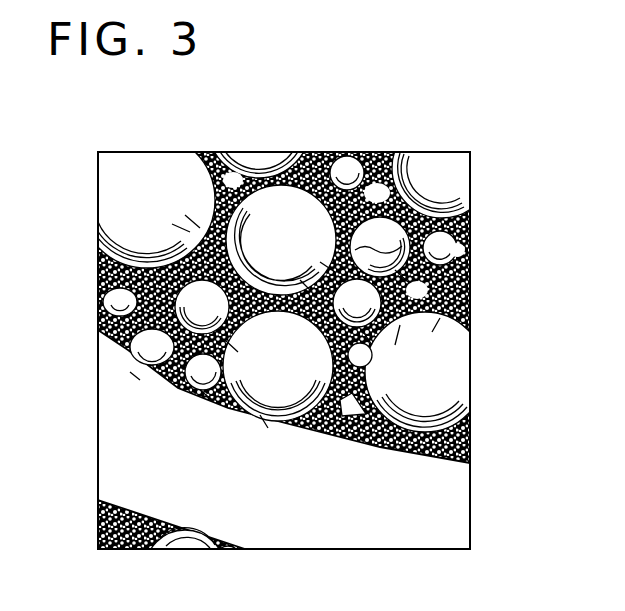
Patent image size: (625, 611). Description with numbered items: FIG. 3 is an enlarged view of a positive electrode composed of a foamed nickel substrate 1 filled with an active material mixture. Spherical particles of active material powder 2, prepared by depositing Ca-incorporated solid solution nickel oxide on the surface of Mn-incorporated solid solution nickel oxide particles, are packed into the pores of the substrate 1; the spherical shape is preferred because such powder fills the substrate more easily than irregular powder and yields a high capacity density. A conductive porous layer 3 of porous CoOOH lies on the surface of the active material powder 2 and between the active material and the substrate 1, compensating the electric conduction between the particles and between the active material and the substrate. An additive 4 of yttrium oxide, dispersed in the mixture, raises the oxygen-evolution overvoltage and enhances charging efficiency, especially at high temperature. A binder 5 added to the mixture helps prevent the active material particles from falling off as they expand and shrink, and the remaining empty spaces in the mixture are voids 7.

The substrate 1 is at (128, 418).
The active material powder 2 is at (122, 197).
The conductive porous layer 3 is at (422, 203).
The additive 4 is at (283, 163).
The binder 5 is at (190, 196).
The void 7 is at (377, 197).